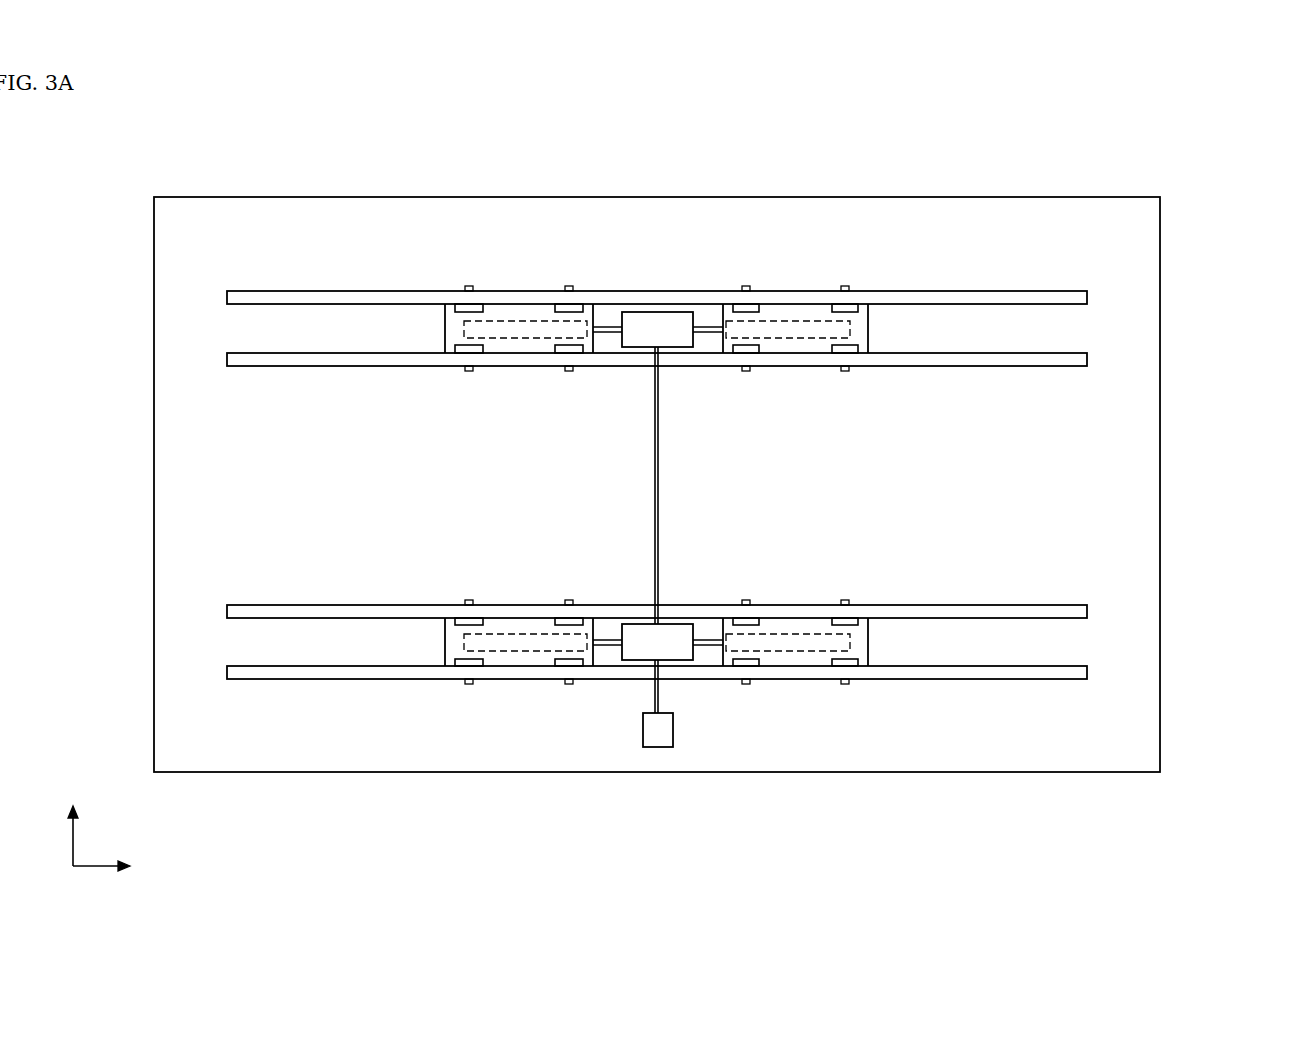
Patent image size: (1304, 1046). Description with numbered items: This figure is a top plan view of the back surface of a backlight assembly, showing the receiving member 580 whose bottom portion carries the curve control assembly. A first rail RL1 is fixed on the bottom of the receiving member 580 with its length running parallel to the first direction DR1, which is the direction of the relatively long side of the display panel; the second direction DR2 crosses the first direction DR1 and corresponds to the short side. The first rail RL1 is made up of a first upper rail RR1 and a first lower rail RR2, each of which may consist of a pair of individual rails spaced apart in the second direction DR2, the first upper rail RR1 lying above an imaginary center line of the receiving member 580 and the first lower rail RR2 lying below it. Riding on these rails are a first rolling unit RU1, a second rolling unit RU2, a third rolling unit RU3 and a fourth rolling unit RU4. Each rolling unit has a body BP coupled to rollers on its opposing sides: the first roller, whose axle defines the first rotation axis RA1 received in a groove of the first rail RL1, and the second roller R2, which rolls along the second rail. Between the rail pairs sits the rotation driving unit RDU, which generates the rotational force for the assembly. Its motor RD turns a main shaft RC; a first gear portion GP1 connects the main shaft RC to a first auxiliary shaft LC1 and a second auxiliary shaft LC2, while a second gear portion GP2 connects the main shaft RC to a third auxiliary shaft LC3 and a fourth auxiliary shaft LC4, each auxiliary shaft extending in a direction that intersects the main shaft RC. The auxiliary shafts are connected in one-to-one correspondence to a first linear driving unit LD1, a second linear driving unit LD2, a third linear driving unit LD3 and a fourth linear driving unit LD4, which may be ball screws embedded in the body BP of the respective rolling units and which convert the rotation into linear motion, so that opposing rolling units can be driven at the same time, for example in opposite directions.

The receiving member 580 is at (1045, 197).
The first rail RL1 is at (763, 485).
The first upper rail RR1 is at (1078, 297).
The first lower rail RR2 is at (733, 642).
The first rolling unit RU1 is at (540, 135).
The second rolling unit RU2 is at (947, 135).
The third rolling unit RU3 is at (410, 838).
The fourth rolling unit RU4 is at (825, 838).
The body BP is at (453, 329).
The first rotation axis RA1 is at (467, 286).
The second roller R2 is at (478, 308).
The first linear driving unit LD1 is at (528, 320).
The second linear driving unit LD2 is at (784, 320).
The third linear driving unit LD3 is at (528, 651).
The fourth linear driving unit LD4 is at (784, 651).
The rotation driving unit RDU is at (570, 529).
The first auxiliary shaft LC1 is at (603, 338).
The second auxiliary shaft LC2 is at (707, 348).
The third auxiliary shaft LC3 is at (549, 606).
The fourth auxiliary shaft LC4 is at (707, 625).
The first gear portion GP1 is at (637, 346).
The second gear portion GP2 is at (640, 632).
The main shaft RC is at (655, 487).
The motor RD is at (668, 720).
The first direction DR1 is at (121, 867).
The second direction DR2 is at (73, 825).